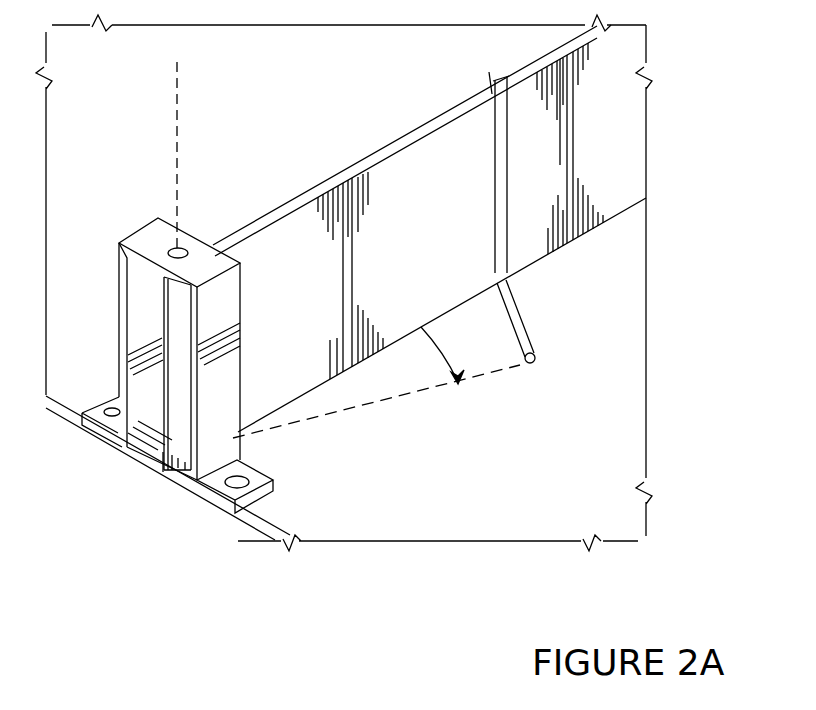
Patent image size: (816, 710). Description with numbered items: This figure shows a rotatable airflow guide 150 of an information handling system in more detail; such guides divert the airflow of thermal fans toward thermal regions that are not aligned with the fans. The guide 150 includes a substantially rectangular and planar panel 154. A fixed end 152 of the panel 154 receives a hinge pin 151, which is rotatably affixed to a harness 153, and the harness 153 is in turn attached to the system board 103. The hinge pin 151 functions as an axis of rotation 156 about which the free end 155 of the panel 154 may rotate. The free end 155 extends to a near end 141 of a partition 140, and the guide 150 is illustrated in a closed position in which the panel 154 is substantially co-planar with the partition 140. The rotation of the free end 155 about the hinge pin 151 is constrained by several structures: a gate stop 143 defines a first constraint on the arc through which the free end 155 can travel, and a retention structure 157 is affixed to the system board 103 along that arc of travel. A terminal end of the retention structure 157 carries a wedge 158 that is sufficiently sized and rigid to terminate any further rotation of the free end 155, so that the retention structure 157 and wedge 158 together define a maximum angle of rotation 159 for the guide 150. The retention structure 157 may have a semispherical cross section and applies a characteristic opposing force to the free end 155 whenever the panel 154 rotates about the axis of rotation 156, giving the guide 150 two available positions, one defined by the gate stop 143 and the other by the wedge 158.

The system board 103 is at (289, 486).
The partition 140 is at (540, 258).
The near end of partition 141 is at (498, 201).
The gate stop 143 is at (470, 97).
The rotatable airflow guide 150 is at (429, 229).
The hinge pin 151 is at (181, 249).
The fixed end of panel 152 is at (165, 381).
The harness 153 is at (167, 287).
The panel 154 is at (418, 241).
The free end of panel 155 is at (493, 92).
The axis of rotation 156 is at (177, 195).
The retention structure 157 is at (529, 315).
The wedge 158 is at (532, 364).
The maximum angle of rotation 159 is at (463, 349).